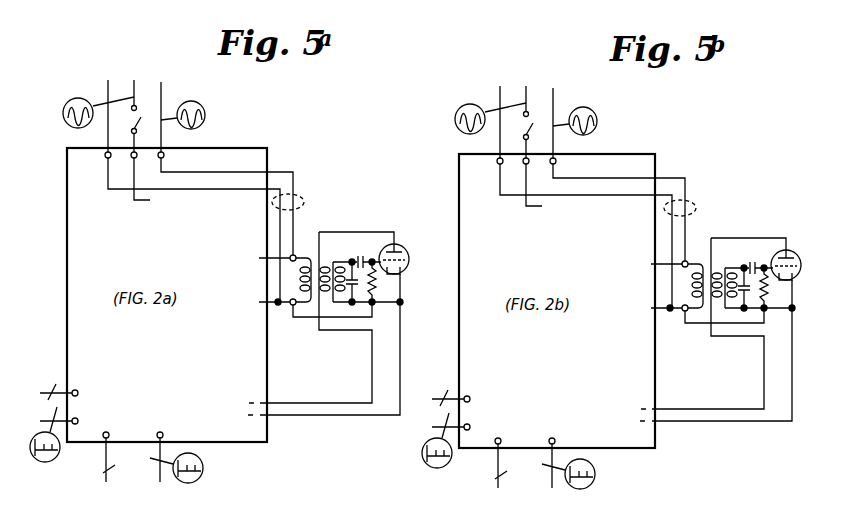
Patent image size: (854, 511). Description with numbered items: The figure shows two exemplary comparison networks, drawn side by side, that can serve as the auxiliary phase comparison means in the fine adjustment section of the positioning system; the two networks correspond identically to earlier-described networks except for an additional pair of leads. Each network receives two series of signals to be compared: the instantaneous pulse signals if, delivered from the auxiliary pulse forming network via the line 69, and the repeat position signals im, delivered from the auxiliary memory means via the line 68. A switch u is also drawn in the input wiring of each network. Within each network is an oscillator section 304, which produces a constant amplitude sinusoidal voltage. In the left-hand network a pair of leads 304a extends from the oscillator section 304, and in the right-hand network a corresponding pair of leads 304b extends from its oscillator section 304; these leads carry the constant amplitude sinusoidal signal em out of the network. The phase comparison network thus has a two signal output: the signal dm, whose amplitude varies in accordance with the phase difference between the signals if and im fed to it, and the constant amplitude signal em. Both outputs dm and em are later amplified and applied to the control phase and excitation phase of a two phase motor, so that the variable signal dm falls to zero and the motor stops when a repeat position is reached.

In FIG. 5A, the oscillator section 304 is at (401, 228).
In FIG. 5B, the oscillator section 304 is at (758, 223).
In FIG. 5A, the pair of leads 304a is at (304, 202).
In FIG. 5B, the pair of leads 304b is at (708, 255).
In FIG. 5A, the line 69 is at (53, 391).
In FIG. 5B, the line 69 is at (444, 388).
In FIG. 5A, the line 68 is at (104, 471).
In FIG. 5B, the line 68 is at (483, 469).
In FIG. 5A, the output signal dm is at (85, 109).
In FIG. 5B, the output signal dm is at (477, 115).
In FIG. 5A, the constant amplitude signal em is at (198, 113).
In FIG. 5B, the constant amplitude signal em is at (590, 119).
In FIG. 5A, the switch u is at (142, 110).
In FIG. 5B, the switch u is at (534, 116).
In FIG. 5A, the instantaneous pulse signals if is at (51, 449).
In FIG. 5B, the instantaneous pulse signals if is at (443, 455).
In FIG. 5A, the repeat position signals im is at (187, 465).
In FIG. 5B, the repeat position signals im is at (579, 471).